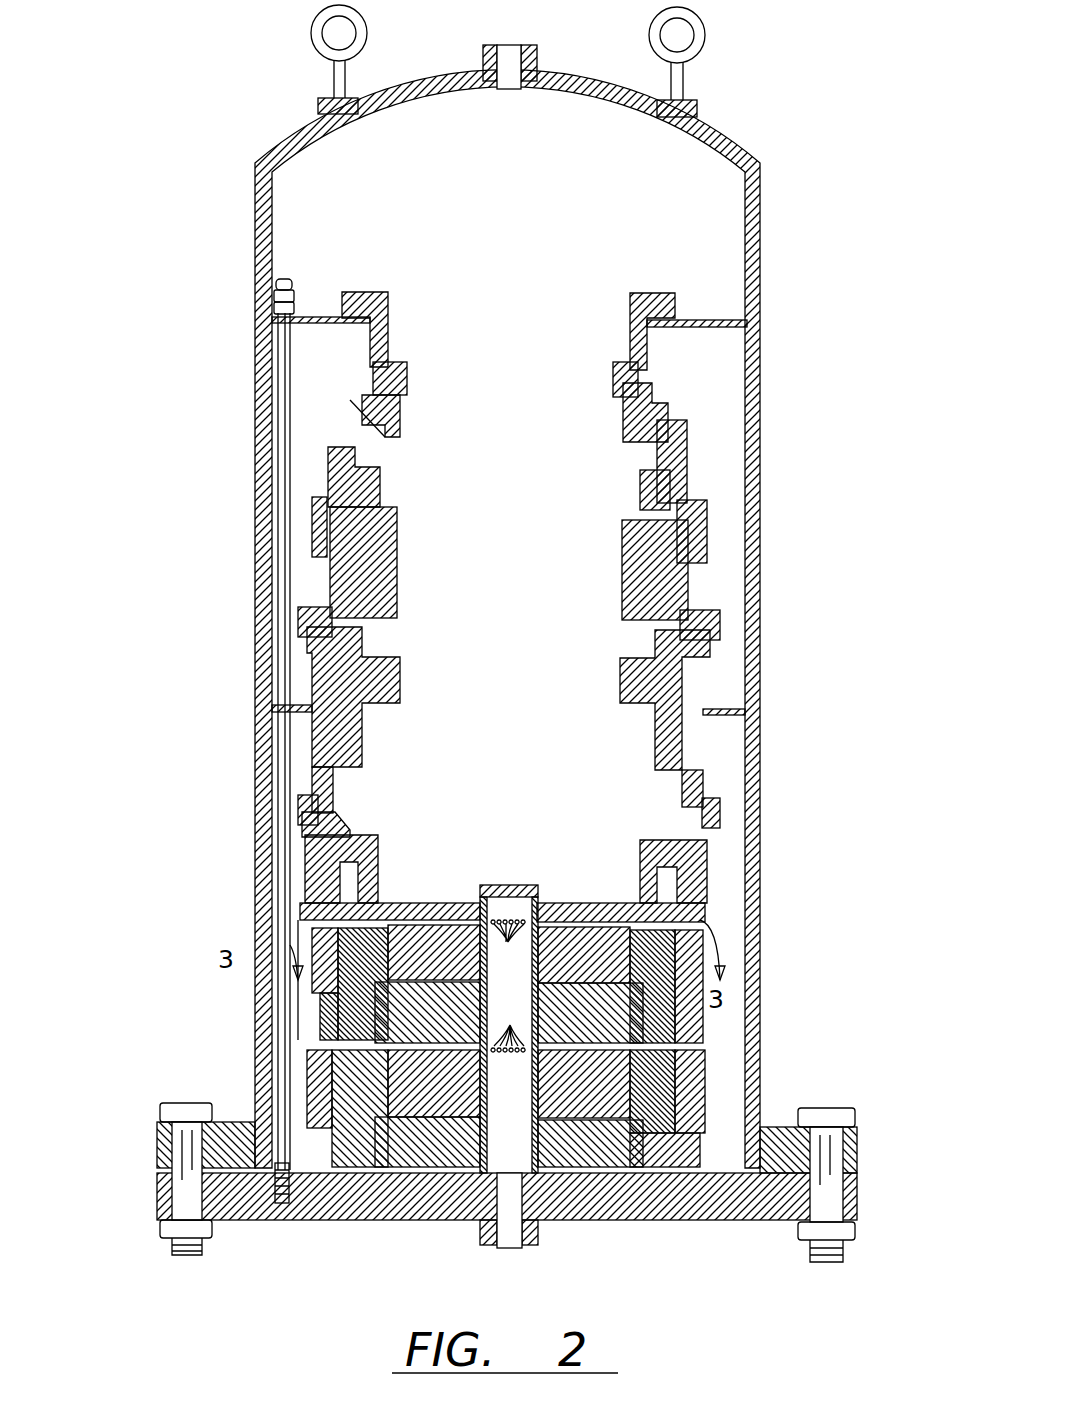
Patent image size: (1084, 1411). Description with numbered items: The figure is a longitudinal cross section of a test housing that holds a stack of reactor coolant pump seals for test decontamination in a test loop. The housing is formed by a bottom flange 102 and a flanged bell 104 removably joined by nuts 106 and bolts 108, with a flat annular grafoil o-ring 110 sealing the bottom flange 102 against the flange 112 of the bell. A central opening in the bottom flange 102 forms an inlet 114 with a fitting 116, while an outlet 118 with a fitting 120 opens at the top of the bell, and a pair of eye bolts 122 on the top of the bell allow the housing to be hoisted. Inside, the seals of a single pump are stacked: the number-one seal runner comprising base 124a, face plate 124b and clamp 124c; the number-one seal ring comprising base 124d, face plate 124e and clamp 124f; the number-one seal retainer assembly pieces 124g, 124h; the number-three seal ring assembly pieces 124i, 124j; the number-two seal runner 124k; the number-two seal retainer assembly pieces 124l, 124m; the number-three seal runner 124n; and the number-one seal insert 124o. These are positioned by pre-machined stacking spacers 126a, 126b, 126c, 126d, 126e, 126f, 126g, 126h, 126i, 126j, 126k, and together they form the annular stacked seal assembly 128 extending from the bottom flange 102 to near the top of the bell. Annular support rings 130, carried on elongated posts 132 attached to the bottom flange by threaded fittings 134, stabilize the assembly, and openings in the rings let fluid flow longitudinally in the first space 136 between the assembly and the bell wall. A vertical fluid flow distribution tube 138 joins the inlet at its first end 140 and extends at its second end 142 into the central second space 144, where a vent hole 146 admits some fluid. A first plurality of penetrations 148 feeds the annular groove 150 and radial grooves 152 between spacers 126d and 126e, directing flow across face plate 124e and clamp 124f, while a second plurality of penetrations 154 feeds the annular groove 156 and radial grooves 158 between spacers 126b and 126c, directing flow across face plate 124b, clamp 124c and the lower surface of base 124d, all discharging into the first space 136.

The bottom flange 102 is at (345, 1222).
The flanged bell 104 is at (763, 742).
The nuts 106 is at (165, 1232).
The bolts 108 is at (165, 1106).
The flat annular grafoil o-ring 110 is at (236, 1140).
The flange of the bell 112 is at (790, 1130).
The inlet 114 is at (510, 1258).
The fitting 116 is at (540, 1238).
The outlet 118 is at (512, 40).
The fitting 120 is at (485, 62).
The eye bolts 122 is at (313, 42).
The base 124a is at (370, 1180).
The SiNi plated face plate 124b is at (670, 1050).
The clamp 124c is at (707, 1078).
The base 124d is at (315, 1020).
The SiNi plated face plate 124e is at (735, 935).
The clamp 124f is at (310, 912).
The #1 seal retainer assembly piece 124g is at (345, 820).
The #1 seal retainer assembly piece 124h is at (380, 855).
The #3 seal ring assembly piece 124i is at (655, 735).
The #3 seal ring assembly piece 124j is at (622, 690).
The #2 seal runner 124k is at (625, 597).
The #2 seal retainer assembly piece 124l is at (382, 487).
The #2 seal retainer assembly piece 124m is at (655, 452).
The #3 seal runner 124n is at (625, 430).
The #1 seal insert 124o is at (630, 335).
The stacking spacer 126a is at (613, 1161).
The stacking spacer 126b is at (613, 1106).
The stacking spacer 126c is at (621, 1029).
The stacking spacer 126d is at (613, 971).
The stacking spacer 126e is at (600, 905).
The stacking spacer 126f is at (690, 808).
The stacking spacer 126g is at (330, 793).
The stacking spacer 126h is at (335, 625).
The stacking spacer 126i is at (680, 508).
The stacking spacer 126j is at (395, 430).
The stacking spacer 126k is at (410, 380).
The stacked seal assembly 128 is at (480, 322).
The support rings 130 is at (320, 305).
The elongated posts 132 is at (292, 402).
The threaded fitting 134 is at (283, 1205).
The first space 136 is at (723, 391).
The fluid flow distribution tube 138 is at (515, 885).
The first end 140 is at (490, 1172).
The second end 142 is at (482, 893).
The second space 144 is at (521, 689).
The vent hole 146 is at (500, 885).
The first plurality of penetrations 148 is at (512, 944).
The annular-shaped groove 150 is at (545, 960).
The radial grooves 152 is at (434, 952).
The second plurality of penetrations 154 is at (512, 1023).
The annular-shaped groove 156 is at (455, 1045).
The radial grooves 158 is at (455, 1062).